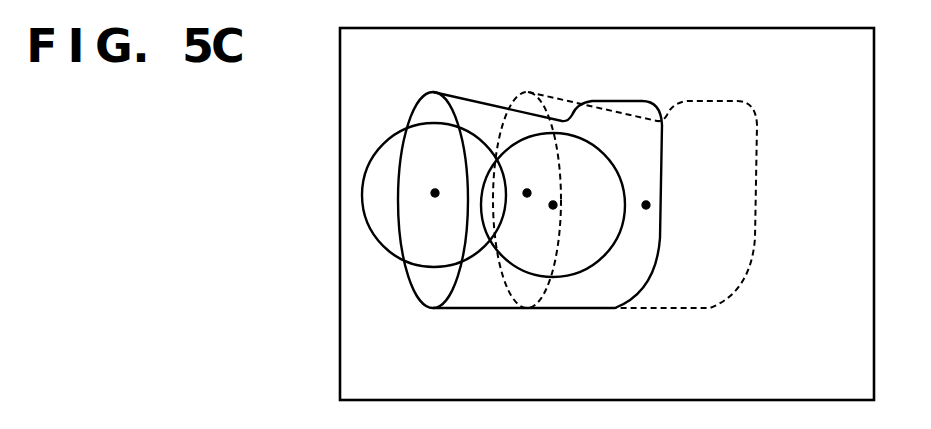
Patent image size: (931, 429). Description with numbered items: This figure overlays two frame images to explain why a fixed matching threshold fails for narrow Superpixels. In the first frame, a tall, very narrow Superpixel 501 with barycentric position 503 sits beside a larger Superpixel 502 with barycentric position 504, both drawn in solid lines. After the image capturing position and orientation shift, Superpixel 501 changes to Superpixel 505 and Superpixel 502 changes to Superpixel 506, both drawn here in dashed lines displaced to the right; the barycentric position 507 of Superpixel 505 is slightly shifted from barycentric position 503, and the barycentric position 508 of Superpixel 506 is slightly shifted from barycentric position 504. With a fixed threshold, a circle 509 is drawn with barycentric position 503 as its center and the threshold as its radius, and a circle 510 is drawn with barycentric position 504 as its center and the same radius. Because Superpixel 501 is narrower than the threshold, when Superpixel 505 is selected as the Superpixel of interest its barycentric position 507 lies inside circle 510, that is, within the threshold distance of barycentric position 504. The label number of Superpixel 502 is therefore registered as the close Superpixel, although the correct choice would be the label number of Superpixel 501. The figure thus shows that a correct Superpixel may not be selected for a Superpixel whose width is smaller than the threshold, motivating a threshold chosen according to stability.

The Superpixel 501 is at (409, 126).
The Superpixel 502 is at (603, 102).
The barycentric position 503 is at (435, 197).
The barycentric position 504 is at (553, 205).
The Superpixel 505 is at (512, 99).
The Superpixel 506 is at (694, 102).
The barycentric position 507 is at (527, 197).
The barycentric position 508 is at (646, 205).
The circle 509 is at (401, 257).
The circle 510 is at (597, 262).